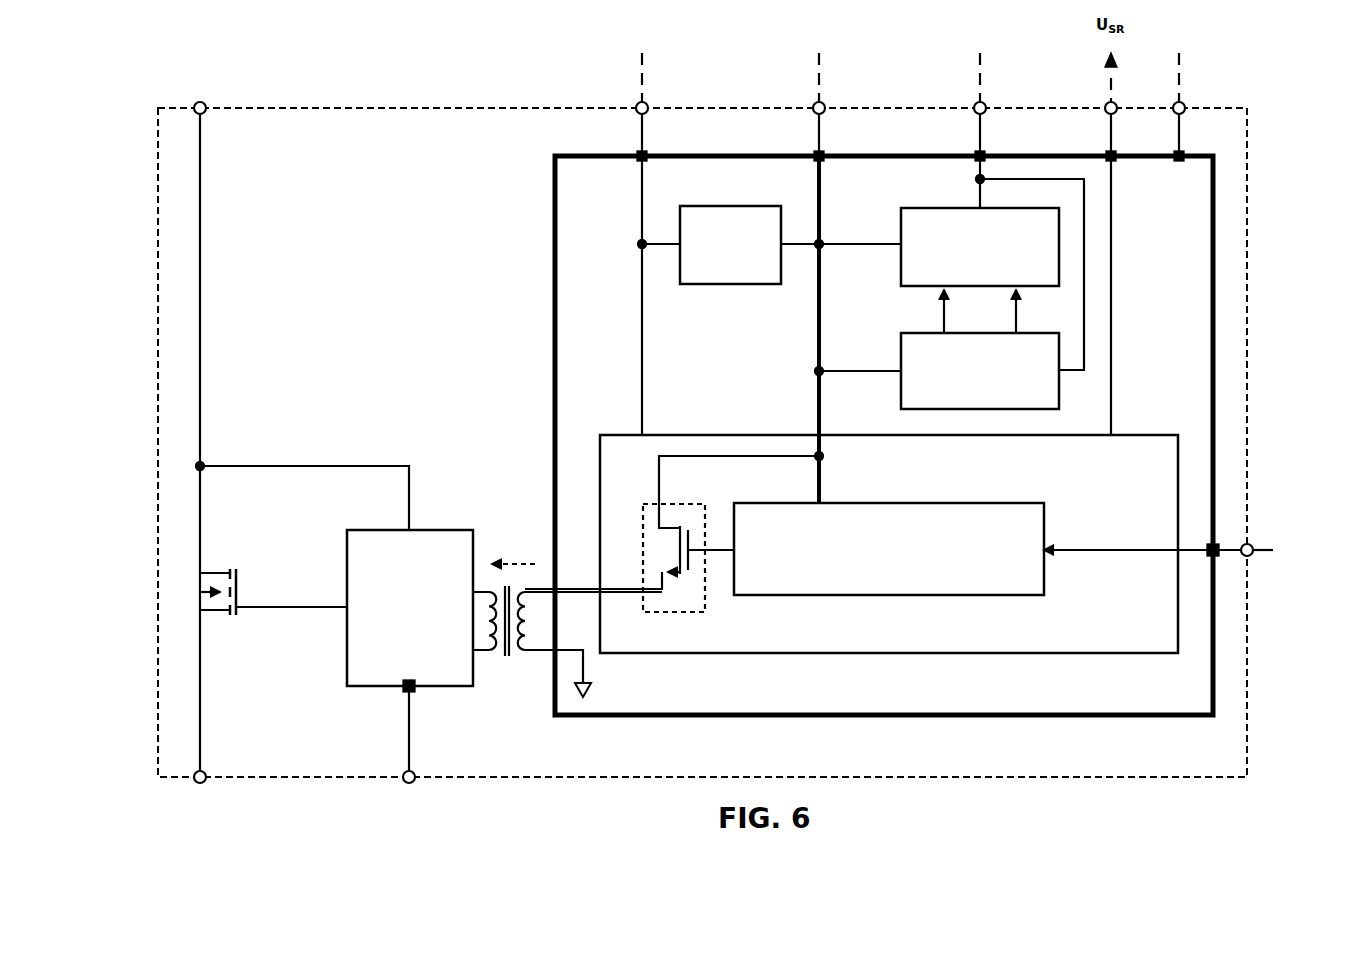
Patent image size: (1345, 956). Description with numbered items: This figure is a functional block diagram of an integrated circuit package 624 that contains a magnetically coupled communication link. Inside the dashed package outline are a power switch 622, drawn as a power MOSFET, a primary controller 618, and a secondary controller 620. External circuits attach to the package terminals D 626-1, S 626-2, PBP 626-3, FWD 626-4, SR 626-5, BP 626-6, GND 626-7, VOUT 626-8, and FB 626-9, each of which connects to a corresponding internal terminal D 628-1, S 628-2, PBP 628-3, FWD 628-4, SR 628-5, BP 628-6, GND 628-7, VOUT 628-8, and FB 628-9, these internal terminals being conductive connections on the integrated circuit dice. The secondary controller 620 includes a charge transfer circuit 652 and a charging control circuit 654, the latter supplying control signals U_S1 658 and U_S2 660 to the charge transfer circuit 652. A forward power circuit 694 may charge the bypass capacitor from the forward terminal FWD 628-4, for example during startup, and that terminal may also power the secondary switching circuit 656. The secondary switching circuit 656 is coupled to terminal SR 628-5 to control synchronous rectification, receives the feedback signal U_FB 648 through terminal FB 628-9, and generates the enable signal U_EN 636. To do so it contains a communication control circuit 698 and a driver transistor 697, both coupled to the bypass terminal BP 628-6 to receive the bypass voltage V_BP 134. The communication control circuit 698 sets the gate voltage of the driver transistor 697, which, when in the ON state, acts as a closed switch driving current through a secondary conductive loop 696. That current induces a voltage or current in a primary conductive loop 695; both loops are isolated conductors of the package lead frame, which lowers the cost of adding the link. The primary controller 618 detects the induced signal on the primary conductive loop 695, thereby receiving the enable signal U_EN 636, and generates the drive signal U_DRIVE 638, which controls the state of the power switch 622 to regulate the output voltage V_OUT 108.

The integrated circuit package 624 is at (392, 106).
The secondary controller 620 is at (1120, 718).
The primary controller 618 is at (430, 530).
The power switch 622 is at (214, 565).
The package terminal D 626-1 is at (227, 86).
The package terminal S 626-2 is at (205, 785).
The package terminal PBP 626-3 is at (414, 785).
The package terminal FWD 626-4 is at (668, 89).
The package terminal SR 626-5 is at (1133, 91).
The package terminal BP 626-6 is at (825, 103).
The package terminal GND 626-7 is at (1184, 103).
The package terminal VOUT 626-8 is at (1006, 89).
The package terminal FB 626-9 is at (1250, 544).
The terminal D 628-1 is at (205, 463).
The terminal S 628-2 is at (206, 638).
The terminal PBP 628-3 is at (415, 692).
The forward terminal FWD 628-4 is at (667, 138).
The terminal SR 628-5 is at (1137, 138).
The bypass terminal BP 628-6 is at (845, 138).
The terminal GND 628-7 is at (1204, 138).
The terminal VOUT 628-8 is at (1006, 138).
The terminal FB 628-9 is at (1218, 556).
The enable signal U_EN 636 is at (515, 530).
The drive signal U_DRIVE 638 is at (304, 582).
The feedback signal U_FB 648 is at (1303, 540).
The charge transfer circuit 652 is at (946, 206).
The charging control circuit 654 is at (901, 362).
The secondary switching circuit 656 is at (712, 434).
The control signal U_S1 658 is at (1022, 304).
The control signal U_S2 660 is at (928, 307).
The forward power circuit 694 is at (744, 193).
The primary conductive loop 695 is at (489, 660).
The secondary conductive loop 696 is at (527, 660).
The driver transistor 697 is at (684, 504).
The communication control circuit 698 is at (936, 503).
The bypass voltage V_BP 134 is at (838, 27).
The output voltage V_OUT 108 is at (1005, 27).